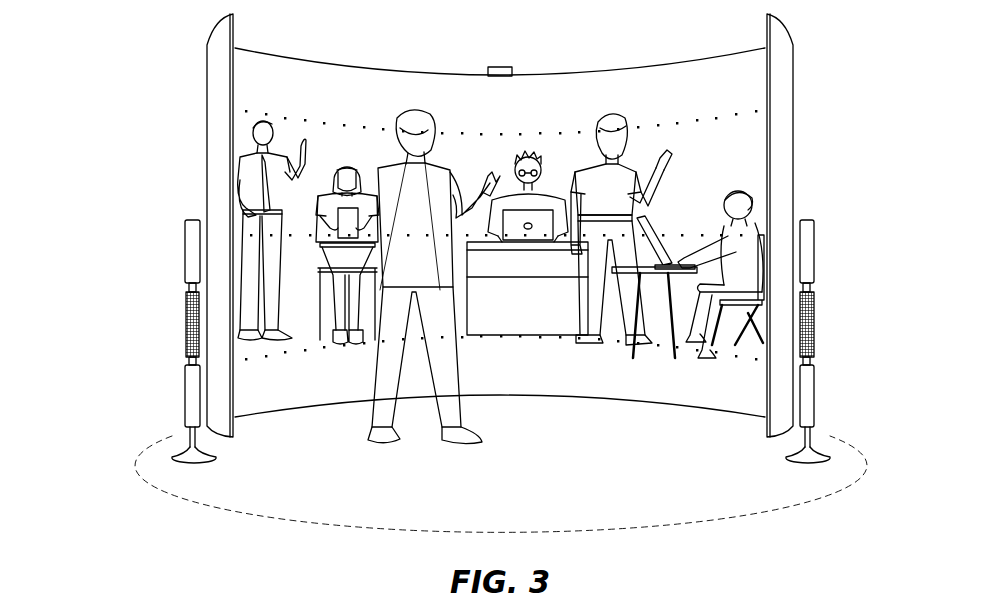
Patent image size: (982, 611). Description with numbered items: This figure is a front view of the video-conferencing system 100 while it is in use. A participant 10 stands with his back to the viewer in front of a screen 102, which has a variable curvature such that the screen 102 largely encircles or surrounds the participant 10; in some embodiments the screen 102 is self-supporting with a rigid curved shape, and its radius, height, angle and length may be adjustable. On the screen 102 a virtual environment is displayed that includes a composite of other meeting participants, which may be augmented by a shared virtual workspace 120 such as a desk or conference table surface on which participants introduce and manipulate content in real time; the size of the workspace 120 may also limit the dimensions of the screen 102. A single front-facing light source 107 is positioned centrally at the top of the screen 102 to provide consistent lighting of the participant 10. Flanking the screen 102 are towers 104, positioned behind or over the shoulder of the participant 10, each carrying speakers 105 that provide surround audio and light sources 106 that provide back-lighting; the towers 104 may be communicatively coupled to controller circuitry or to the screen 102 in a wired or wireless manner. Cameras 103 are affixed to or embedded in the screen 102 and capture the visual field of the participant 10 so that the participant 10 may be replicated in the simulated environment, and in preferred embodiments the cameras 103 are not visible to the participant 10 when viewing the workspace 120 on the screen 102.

The video-conferencing system 100 is at (165, 82).
The screen 102 is at (795, 110).
The cameras 103 is at (640, 130).
The participant 10 is at (407, 112).
The light source 107 is at (508, 65).
The light sources 106 is at (183, 240).
The speakers 105 is at (183, 317).
The towers 104 is at (170, 365).
The workspace 120 is at (565, 410).